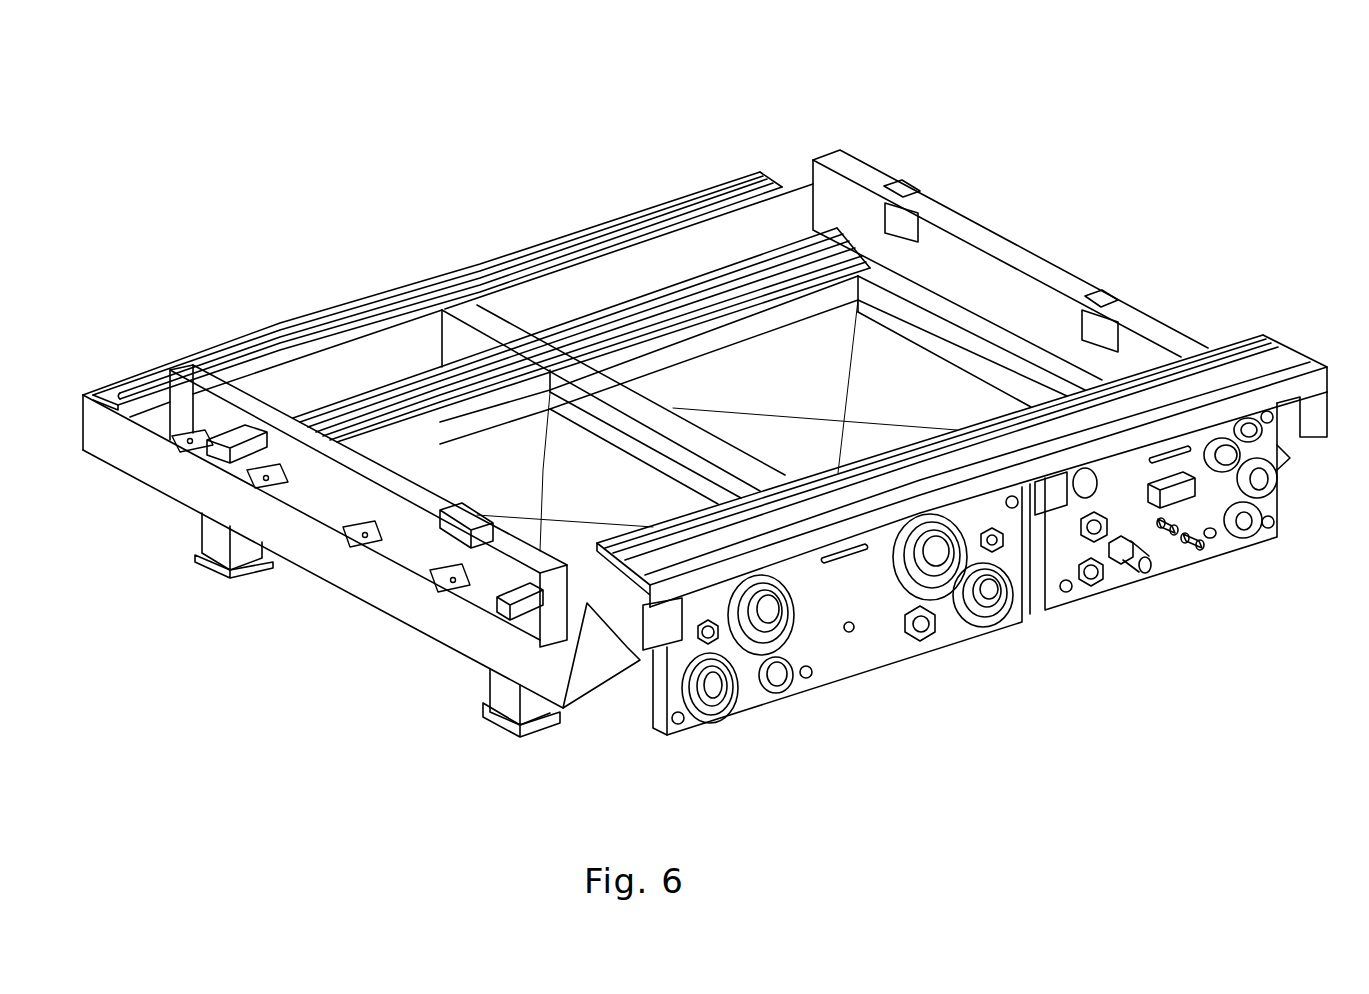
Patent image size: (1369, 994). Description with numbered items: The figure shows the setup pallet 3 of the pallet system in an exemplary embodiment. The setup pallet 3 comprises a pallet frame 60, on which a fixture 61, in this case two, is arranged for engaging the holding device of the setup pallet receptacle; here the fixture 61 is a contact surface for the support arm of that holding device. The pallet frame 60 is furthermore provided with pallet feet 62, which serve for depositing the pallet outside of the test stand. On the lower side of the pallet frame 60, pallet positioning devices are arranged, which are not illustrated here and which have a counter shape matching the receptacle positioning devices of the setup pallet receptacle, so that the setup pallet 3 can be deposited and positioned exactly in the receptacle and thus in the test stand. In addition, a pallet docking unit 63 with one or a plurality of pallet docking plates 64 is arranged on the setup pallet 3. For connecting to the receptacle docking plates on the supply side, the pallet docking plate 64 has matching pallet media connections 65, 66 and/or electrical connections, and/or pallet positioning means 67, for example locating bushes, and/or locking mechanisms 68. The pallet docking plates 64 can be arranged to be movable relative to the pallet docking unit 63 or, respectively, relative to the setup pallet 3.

The setup pallet 3 is at (435, 203).
The pallet frame 60 is at (792, 213).
The fixture 61 is at (277, 480).
The pallet feet 62 is at (218, 539).
The pallet docking unit 63 is at (1297, 340).
The pallet docking plate 64 is at (872, 673).
The pallet media connection 65 is at (780, 697).
The pallet media connection 66 is at (1248, 522).
The pallet positioning means 67 is at (708, 644).
The locking mechanism 68 is at (1177, 493).